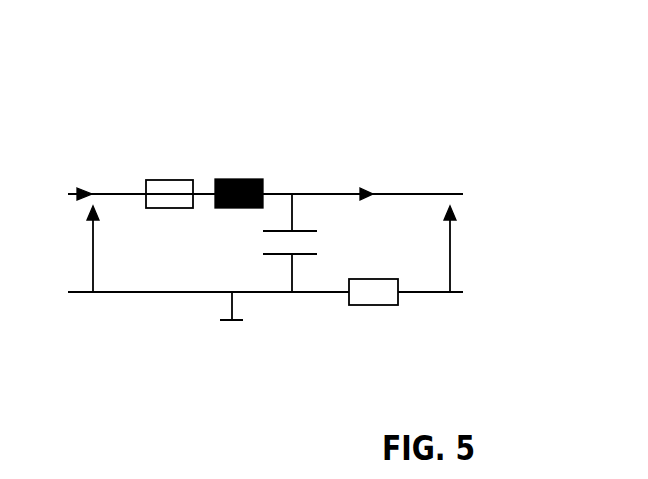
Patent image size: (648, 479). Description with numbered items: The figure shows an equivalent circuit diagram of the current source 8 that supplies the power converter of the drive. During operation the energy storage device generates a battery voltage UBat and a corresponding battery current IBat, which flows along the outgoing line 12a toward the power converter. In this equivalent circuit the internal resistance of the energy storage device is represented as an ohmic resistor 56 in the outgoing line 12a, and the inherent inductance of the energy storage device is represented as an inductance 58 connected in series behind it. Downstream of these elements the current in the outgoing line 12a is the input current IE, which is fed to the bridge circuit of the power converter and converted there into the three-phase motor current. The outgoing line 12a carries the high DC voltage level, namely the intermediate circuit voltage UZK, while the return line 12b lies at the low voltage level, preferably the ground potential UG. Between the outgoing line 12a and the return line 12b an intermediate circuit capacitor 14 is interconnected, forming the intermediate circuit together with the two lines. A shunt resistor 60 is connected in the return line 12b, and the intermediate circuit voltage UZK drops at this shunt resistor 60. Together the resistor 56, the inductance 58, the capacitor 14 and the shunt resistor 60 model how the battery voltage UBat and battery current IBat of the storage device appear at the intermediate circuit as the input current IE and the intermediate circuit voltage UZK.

The current source 8 is at (403, 84).
The outgoing line 12a is at (108, 193).
The return line 12b is at (85, 293).
The intermediate circuit capacitor 14 is at (277, 244).
The ohmic resistor 56 is at (173, 180).
The inductance 58 is at (240, 179).
The shunt resistor 60 is at (373, 306).
The battery current IBat is at (70, 193).
The input current IE is at (332, 193).
The battery voltage UBat is at (92, 243).
The intermediate circuit voltage UZK is at (455, 244).
The ground potential UG is at (225, 323).